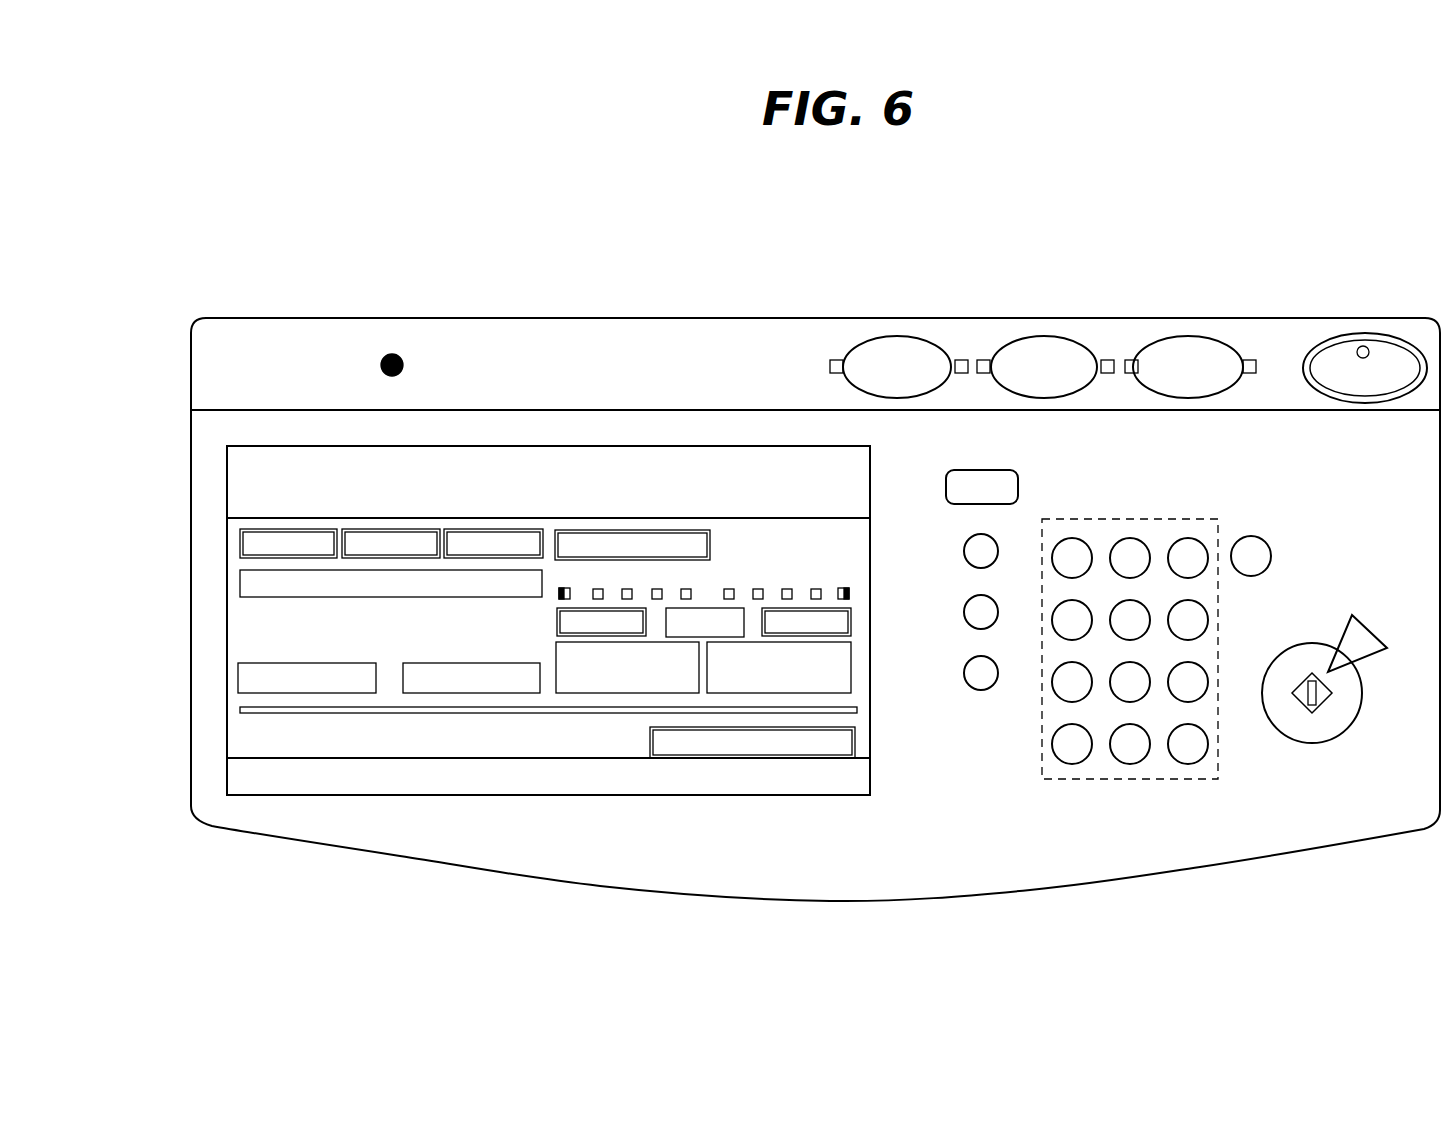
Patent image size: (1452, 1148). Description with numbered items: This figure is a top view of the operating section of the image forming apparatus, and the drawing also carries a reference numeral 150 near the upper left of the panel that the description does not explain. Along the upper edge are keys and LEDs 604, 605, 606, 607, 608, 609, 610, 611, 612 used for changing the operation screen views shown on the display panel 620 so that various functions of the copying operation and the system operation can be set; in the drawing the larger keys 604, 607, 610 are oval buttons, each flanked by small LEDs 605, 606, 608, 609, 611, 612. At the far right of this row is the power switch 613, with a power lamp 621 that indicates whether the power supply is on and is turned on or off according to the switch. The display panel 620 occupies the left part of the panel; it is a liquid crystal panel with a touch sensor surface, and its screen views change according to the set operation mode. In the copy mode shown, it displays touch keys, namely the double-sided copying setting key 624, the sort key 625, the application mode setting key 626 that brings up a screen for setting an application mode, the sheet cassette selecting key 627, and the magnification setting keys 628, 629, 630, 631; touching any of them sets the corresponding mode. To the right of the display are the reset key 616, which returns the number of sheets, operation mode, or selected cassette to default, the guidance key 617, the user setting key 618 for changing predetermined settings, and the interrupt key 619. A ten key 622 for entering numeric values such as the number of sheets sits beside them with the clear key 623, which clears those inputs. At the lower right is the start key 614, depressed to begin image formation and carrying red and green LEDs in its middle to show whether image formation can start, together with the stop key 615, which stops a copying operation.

The operation unit 150 is at (394, 354).
The screen view changing key 604 is at (908, 336).
The screen view changing LED 605 is at (840, 360).
The screen view changing LED 606 is at (960, 360).
The screen view changing key 607 is at (1045, 336).
The screen view changing LED 608 is at (985, 360).
The screen view changing LED 609 is at (1108, 360).
The screen view changing key 610 is at (1195, 336).
The screen view changing LED 611 is at (1132, 360).
The screen view changing LED 612 is at (1250, 360).
The power switch 613 is at (1392, 363).
The start key 614 is at (1293, 737).
The stop key 615 is at (1352, 614).
The reset key 616 is at (985, 472).
The guidance key 617 is at (964, 550).
The user setting key 618 is at (964, 612).
The interrupt key 619 is at (964, 673).
The display panel 620 is at (688, 796).
The power lamp 621 is at (1363, 346).
The ten key 622 is at (1137, 519).
The clear key 623 is at (1265, 538).
The double-sided copying setting key 624 is at (530, 694).
The sort key 625 is at (240, 680).
The application mode setting key 626 is at (845, 760).
The sheet cassette selecting key 627 is at (710, 547).
The magnification setting key 628 is at (240, 543).
The magnification setting key 629 is at (385, 530).
The magnification setting key 630 is at (475, 530).
The magnification setting key 631 is at (240, 585).